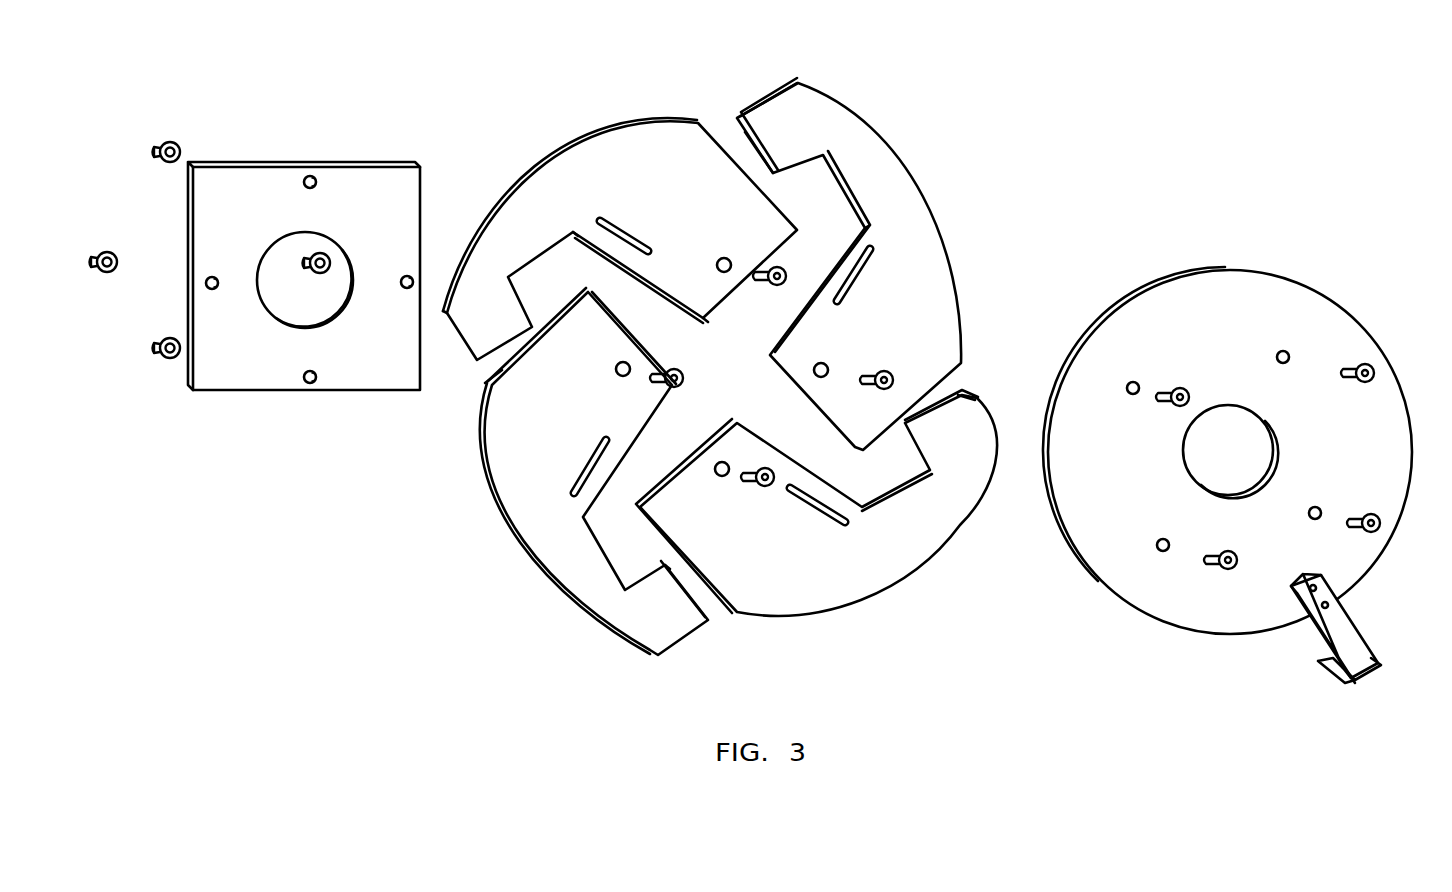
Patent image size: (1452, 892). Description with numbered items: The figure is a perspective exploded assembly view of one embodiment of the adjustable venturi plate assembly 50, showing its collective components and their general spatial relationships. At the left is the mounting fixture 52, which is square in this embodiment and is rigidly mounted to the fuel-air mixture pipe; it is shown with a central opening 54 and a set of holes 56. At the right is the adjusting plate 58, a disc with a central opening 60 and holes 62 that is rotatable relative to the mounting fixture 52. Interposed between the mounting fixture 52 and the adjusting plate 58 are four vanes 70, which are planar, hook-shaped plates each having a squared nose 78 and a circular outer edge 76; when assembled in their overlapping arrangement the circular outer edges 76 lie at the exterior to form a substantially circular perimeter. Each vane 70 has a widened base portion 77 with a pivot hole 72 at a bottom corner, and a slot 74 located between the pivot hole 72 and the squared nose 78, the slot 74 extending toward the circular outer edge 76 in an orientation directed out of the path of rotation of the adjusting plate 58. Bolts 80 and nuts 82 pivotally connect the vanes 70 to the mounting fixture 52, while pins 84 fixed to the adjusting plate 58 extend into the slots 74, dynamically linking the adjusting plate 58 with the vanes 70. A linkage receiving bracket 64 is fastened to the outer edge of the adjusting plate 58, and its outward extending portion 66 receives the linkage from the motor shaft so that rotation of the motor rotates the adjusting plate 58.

The adjustable venturi plate assembly 50 is at (898, 97).
The mounting fixture 52 is at (304, 276).
The central aperture 54 is at (292, 296).
The mounting holes 56 is at (313, 178).
The adjusting plate 58 is at (1227, 450).
The central opening 60 is at (1246, 432).
The holes 62 is at (1132, 382).
The linkage receiving bracket 64 is at (1332, 626).
The outward extending portion 66 is at (1312, 658).
The vanes 70 is at (722, 369).
The pivot hole 72 is at (728, 257).
The slot 74 is at (618, 233).
The circular outer edge 76 is at (548, 158).
The widened base portion 77 is at (696, 284).
The squared nose 78 is at (760, 108).
The bolts 80 is at (784, 268).
The nuts 82 is at (178, 140).
The pins 84 is at (1178, 392).